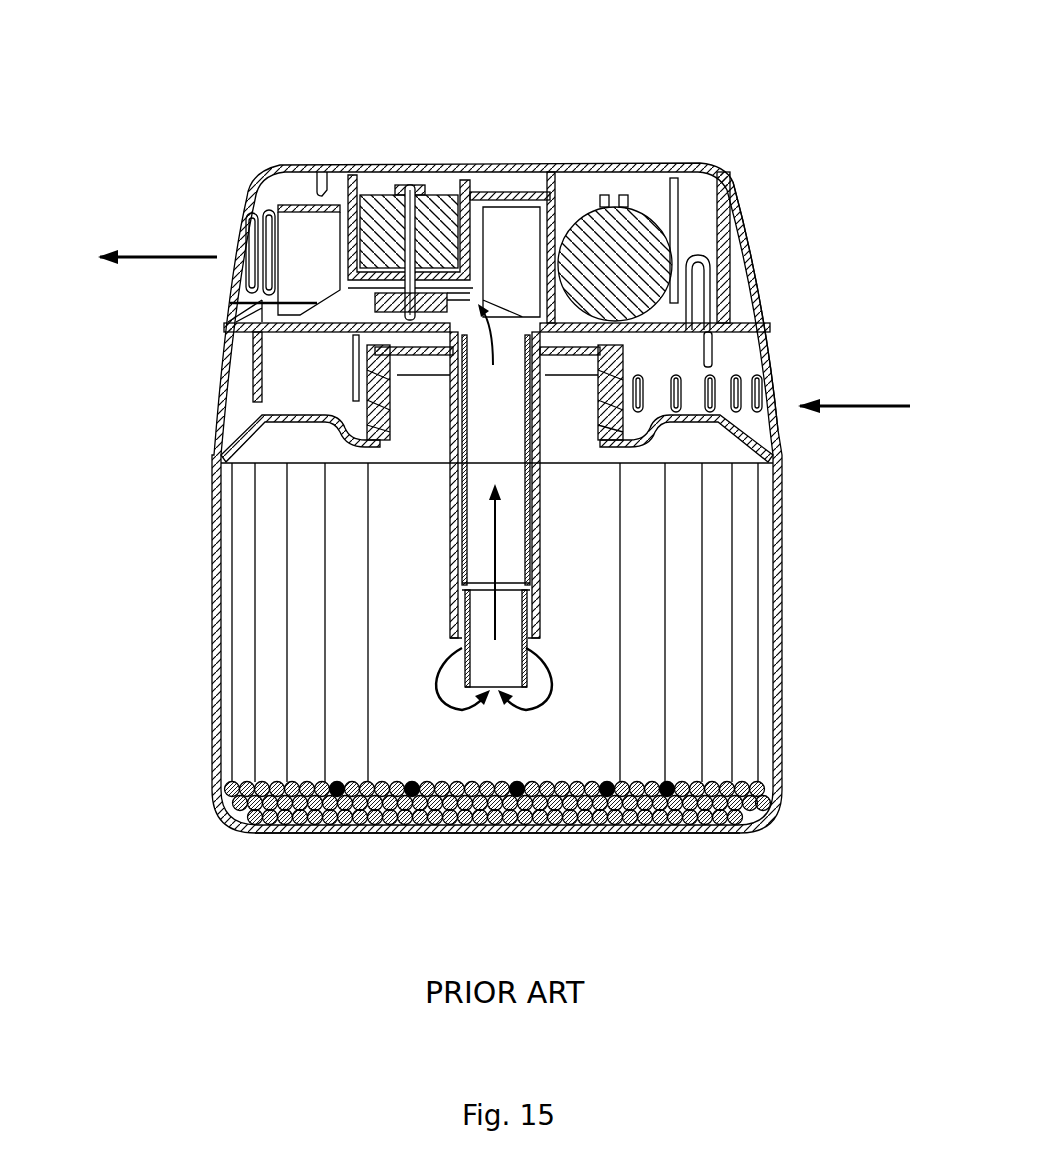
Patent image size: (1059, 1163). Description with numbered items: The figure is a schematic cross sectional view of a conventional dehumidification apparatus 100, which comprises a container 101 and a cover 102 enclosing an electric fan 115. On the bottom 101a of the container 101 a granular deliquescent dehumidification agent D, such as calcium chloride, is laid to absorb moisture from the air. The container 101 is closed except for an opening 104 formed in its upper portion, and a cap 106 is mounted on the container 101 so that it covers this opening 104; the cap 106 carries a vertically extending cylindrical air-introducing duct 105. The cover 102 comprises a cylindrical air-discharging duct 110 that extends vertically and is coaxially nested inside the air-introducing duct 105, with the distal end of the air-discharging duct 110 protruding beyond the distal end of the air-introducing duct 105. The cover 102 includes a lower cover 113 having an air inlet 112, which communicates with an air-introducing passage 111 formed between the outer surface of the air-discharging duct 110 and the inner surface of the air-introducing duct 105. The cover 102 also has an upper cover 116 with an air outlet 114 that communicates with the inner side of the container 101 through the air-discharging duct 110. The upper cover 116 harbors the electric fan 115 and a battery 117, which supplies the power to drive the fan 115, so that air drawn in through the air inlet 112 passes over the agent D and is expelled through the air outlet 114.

The dehumidification apparatus 100 is at (760, 58).
The container 101 is at (175, 640).
The bottom 101a is at (438, 833).
The cover 102 is at (165, 338).
The opening 104 is at (610, 417).
The air-introducing duct 105 is at (540, 558).
The cap 106 is at (708, 365).
The air-discharging duct 110 is at (462, 498).
The air-introducing passage 111 is at (462, 543).
The air inlet 112 is at (778, 423).
The lower cover 113 is at (208, 423).
The air outlet 114 is at (242, 217).
The electric fan 115 is at (310, 223).
The upper cover 116 is at (752, 237).
The battery 117 is at (633, 223).
The dehumidification agent D is at (558, 832).